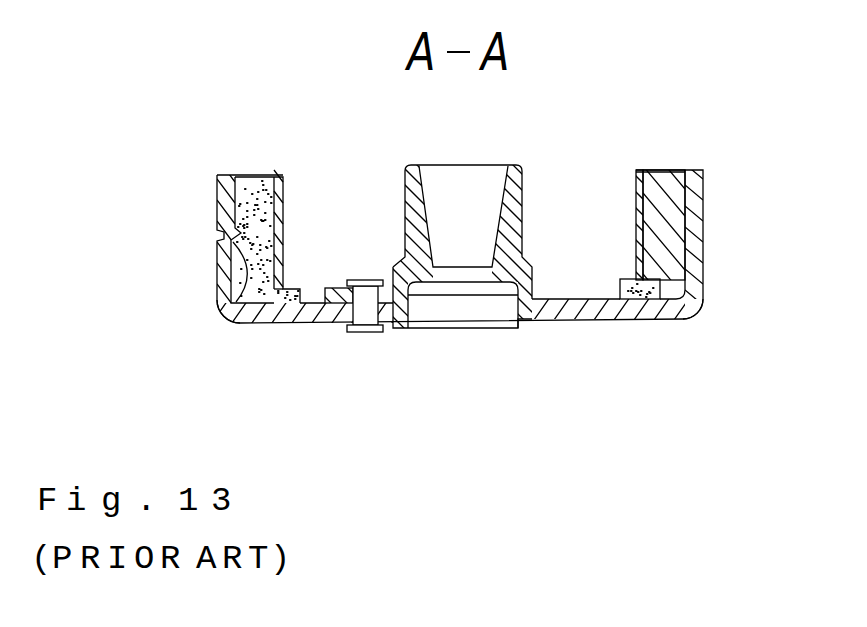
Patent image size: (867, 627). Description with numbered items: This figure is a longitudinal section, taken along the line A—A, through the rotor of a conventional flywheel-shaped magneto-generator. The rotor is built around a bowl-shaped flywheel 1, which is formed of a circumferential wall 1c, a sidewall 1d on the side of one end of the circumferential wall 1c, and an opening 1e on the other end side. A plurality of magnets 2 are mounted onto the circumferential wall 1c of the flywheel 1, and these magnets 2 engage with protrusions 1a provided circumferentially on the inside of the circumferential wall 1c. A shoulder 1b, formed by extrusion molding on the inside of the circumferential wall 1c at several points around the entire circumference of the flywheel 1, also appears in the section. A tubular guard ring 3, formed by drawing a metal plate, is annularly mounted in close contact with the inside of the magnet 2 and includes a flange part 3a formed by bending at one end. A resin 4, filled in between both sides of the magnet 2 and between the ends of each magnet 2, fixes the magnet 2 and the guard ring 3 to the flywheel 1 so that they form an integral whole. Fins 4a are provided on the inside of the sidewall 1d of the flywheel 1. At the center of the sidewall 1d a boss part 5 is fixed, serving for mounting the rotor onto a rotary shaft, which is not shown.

The flywheel 1 is at (703, 200).
The protrusions 1a is at (238, 323).
The shoulder 1b is at (690, 297).
The circumferential wall 1c is at (703, 254).
The sidewall 1d is at (590, 320).
The opening 1e is at (303, 176).
The magnets 2 is at (675, 178).
The guard ring 3 is at (636, 213).
The flange part 3a is at (650, 170).
The resin 4 is at (252, 186).
The fins 4a is at (298, 287).
The boss part 5 is at (512, 165).